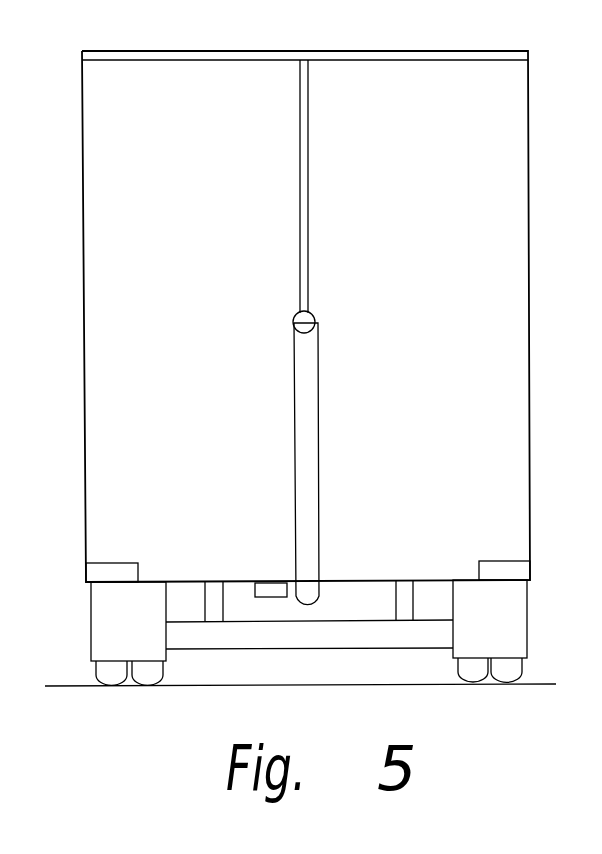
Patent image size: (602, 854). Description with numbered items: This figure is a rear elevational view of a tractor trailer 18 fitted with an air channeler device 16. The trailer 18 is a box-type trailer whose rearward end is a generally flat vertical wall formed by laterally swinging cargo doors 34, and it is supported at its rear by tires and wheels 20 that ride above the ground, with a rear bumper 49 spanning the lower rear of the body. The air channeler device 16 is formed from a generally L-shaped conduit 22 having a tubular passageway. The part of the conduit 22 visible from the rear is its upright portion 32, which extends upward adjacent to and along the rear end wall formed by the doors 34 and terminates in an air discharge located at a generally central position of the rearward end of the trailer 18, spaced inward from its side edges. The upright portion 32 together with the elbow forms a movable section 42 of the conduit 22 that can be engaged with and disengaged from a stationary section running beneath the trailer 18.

The tractor trailer 18 is at (373, 49).
The cargo doors 34 is at (228, 221).
The air channeler device 16 is at (350, 458).
The movable section 42 is at (319, 396).
The upright portion 32 is at (341, 464).
The conduit 22 is at (320, 548).
The rear bumper 49 is at (282, 651).
The tires and wheels 20 is at (527, 664).